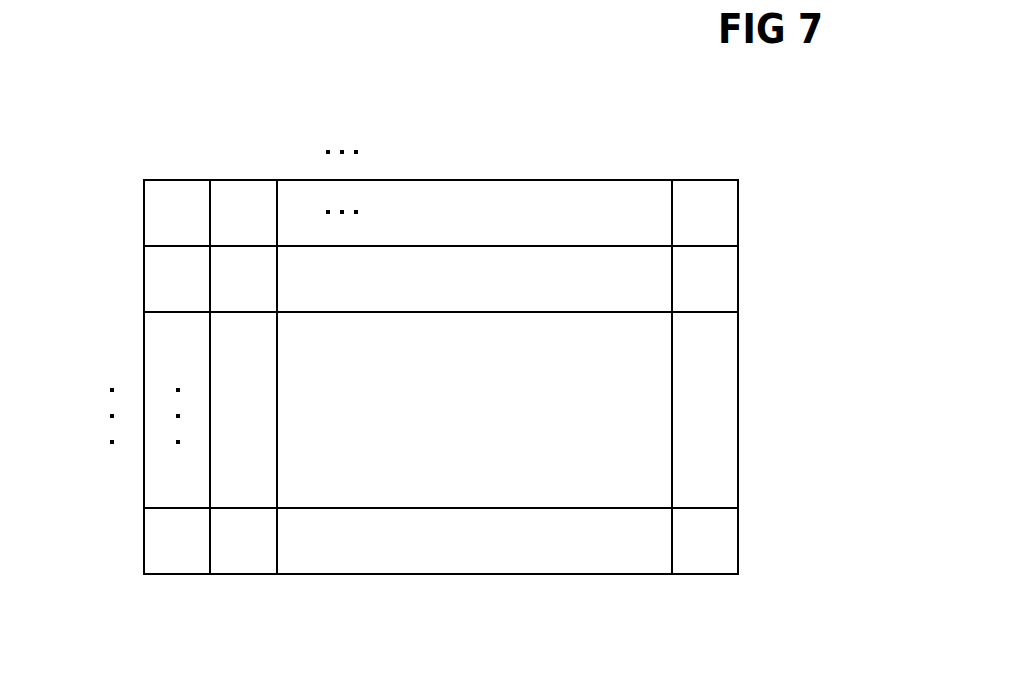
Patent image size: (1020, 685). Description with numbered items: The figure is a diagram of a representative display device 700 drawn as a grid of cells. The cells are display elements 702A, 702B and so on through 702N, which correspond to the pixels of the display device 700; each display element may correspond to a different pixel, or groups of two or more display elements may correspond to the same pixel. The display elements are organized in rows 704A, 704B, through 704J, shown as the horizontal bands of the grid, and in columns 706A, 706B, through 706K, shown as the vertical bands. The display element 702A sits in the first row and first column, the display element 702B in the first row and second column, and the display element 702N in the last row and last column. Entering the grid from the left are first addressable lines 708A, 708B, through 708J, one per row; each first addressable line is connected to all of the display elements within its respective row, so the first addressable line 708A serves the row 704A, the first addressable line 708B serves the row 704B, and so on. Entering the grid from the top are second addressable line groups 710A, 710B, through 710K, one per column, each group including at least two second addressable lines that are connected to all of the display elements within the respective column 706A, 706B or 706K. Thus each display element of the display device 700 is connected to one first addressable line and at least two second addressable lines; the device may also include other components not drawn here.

The display device 700 is at (50, 113).
The display element 702A is at (198, 222).
The display element 702B is at (264, 222).
The display element 702N is at (728, 550).
The row 704A is at (755, 212).
The row 704B is at (755, 278).
The row 704J is at (755, 541).
The column 706A is at (179, 597).
The column 706B is at (245, 597).
The column 706K is at (707, 597).
The first addressable line 708A is at (144, 212).
The first addressable line 708B is at (144, 278).
The first addressable line 708J is at (144, 541).
The second addressable line group 710A is at (177, 180).
The second addressable line group 710B is at (243, 180).
The second addressable line group 710K is at (704, 180).